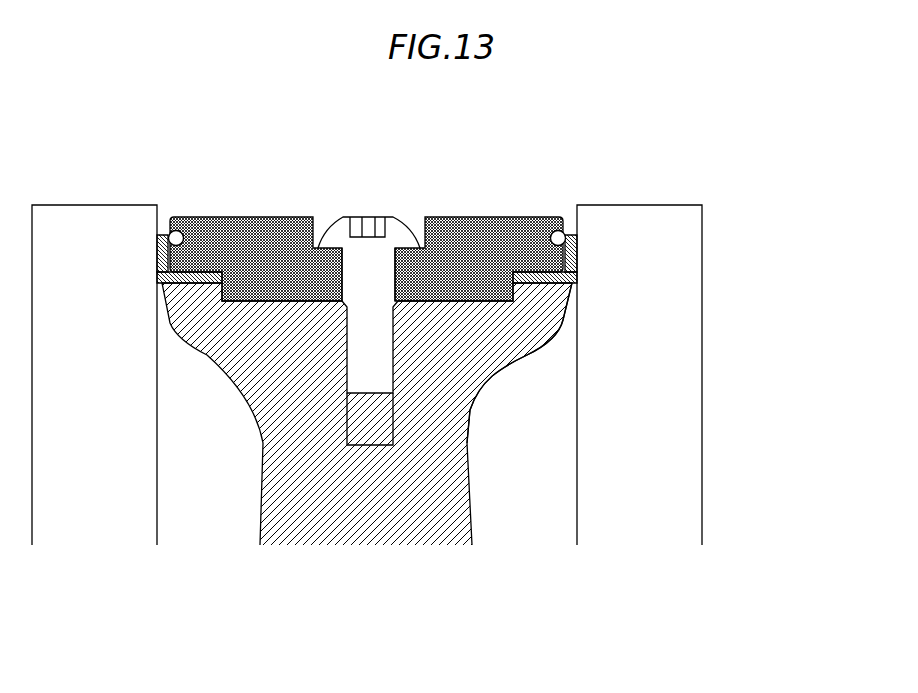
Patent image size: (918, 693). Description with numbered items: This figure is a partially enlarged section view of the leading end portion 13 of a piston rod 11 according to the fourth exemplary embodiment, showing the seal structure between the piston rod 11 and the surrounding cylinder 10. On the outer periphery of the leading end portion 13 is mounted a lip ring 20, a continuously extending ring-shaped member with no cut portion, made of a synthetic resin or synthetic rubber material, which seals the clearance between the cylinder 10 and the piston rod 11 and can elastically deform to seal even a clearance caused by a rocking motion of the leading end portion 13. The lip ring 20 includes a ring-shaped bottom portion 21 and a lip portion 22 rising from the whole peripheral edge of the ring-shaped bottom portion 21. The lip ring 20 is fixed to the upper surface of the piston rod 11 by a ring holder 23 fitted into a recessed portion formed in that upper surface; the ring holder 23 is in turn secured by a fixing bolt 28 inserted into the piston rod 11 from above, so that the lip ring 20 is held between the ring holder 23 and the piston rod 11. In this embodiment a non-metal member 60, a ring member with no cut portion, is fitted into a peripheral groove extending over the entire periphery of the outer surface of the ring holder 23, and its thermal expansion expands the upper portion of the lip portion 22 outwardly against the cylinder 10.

The cylinder 10 is at (663, 352).
The piston rod 11 is at (214, 519).
The leading end portion 13 is at (478, 355).
The lip ring 20 is at (512, 284).
The ring-shaped bottom portion 21 is at (572, 298).
The lip portion 22 is at (580, 256).
The ring holder 23 is at (458, 218).
The fixing bolt 28 is at (400, 217).
The non-metal member 60 is at (564, 219).